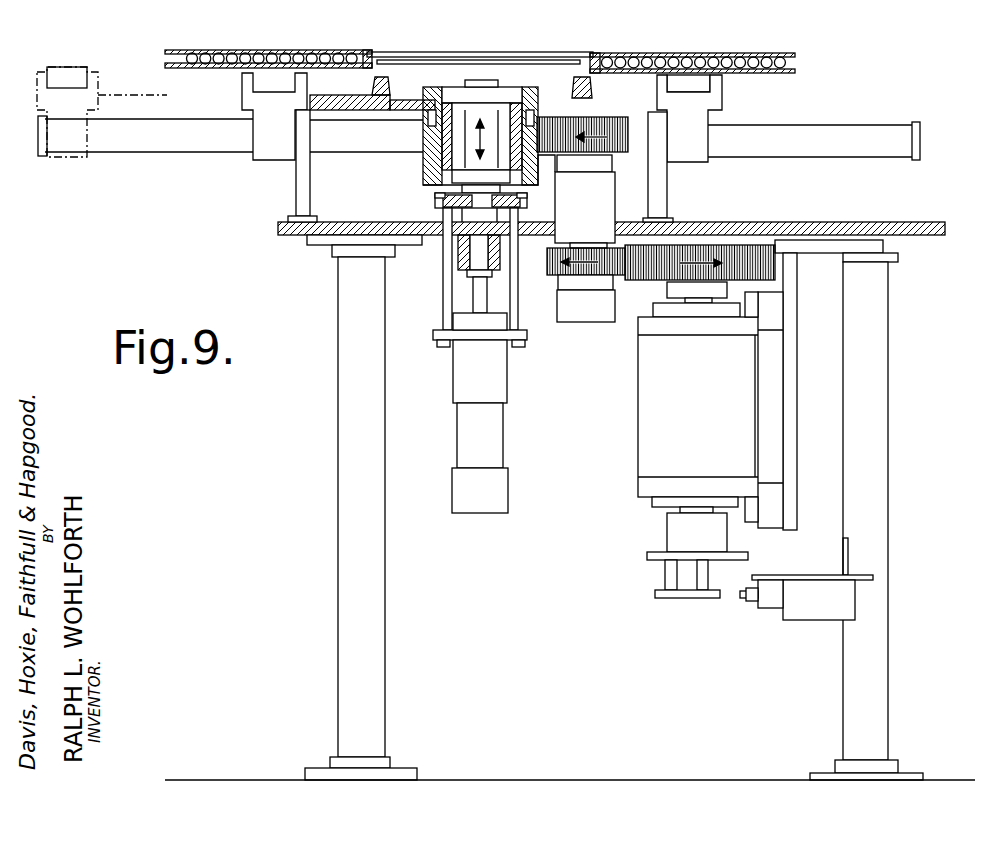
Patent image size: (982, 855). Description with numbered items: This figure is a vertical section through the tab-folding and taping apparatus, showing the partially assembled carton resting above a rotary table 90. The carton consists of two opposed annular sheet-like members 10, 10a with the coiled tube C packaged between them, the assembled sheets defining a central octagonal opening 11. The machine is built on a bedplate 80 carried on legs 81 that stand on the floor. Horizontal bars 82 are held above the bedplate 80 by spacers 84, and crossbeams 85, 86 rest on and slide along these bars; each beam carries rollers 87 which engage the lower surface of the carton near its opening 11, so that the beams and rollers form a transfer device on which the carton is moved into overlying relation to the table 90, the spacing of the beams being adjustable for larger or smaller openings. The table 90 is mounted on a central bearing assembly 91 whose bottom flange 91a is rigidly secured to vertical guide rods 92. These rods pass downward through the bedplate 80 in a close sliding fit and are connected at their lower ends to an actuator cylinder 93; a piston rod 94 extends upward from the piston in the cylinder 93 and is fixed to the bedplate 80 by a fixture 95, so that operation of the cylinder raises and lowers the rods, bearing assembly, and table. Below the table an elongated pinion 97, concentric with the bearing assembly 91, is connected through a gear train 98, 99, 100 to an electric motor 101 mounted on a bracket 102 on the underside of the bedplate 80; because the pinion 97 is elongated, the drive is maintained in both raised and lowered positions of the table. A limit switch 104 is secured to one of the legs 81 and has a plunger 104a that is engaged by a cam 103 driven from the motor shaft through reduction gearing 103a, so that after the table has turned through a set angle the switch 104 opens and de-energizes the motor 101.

The sheet-like member 10 is at (205, 50).
The sheet-like member 10a is at (797, 61).
The central opening 11 is at (388, 52).
The coiled tube C is at (610, 53).
The bedplate 80 is at (935, 222).
The legs 81 is at (338, 578).
The bar 82 is at (157, 142).
The spacers 84 is at (297, 186).
The crossbeam 85 is at (713, 103).
The crossbeam 86 is at (248, 100).
The rollers 87 is at (70, 72).
The rotary table 90 is at (343, 103).
The central bearing assembly 91 is at (490, 92).
The bottom flange 91a is at (433, 202).
The vertical guide rods 92 is at (445, 284).
The cylinder 93 is at (465, 383).
The piston rod 94 is at (473, 296).
The fixture 95 is at (478, 246).
The elongated pinion 97 is at (428, 160).
The gear 98 is at (625, 152).
The gear 99 is at (548, 268).
The gear 100 is at (660, 272).
The electric motor 101 is at (657, 421).
The bracket 102 is at (788, 344).
The cam 103 is at (668, 594).
The reduction gearing 103a is at (685, 533).
The limit switch 104 is at (812, 604).
The plunger 104a is at (750, 602).